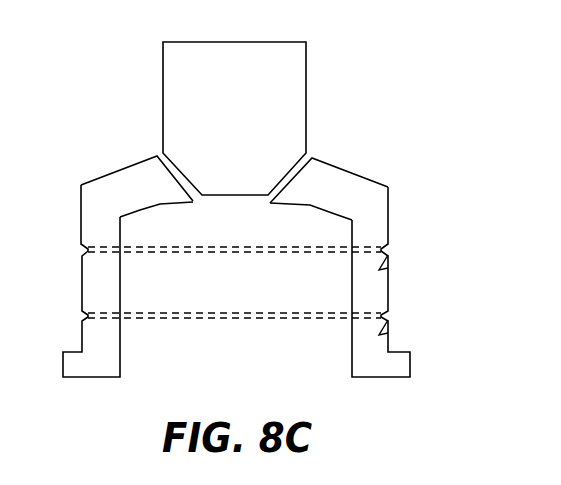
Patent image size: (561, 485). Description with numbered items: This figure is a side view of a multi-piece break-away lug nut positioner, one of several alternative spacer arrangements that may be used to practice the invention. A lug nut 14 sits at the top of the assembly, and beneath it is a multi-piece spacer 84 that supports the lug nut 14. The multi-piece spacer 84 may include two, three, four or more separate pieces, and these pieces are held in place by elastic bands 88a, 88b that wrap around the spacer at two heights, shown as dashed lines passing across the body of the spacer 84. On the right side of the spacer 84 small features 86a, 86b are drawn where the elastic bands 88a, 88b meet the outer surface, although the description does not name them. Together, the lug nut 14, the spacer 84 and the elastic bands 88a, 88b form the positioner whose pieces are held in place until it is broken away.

The lug nut 14 is at (306, 135).
The multi-piece spacer 84 is at (445, 222).
The upper flap 86a is at (379, 270).
The lower flap 86b is at (379, 335).
The elastic band 88a is at (233, 252).
The elastic band 88b is at (203, 317).